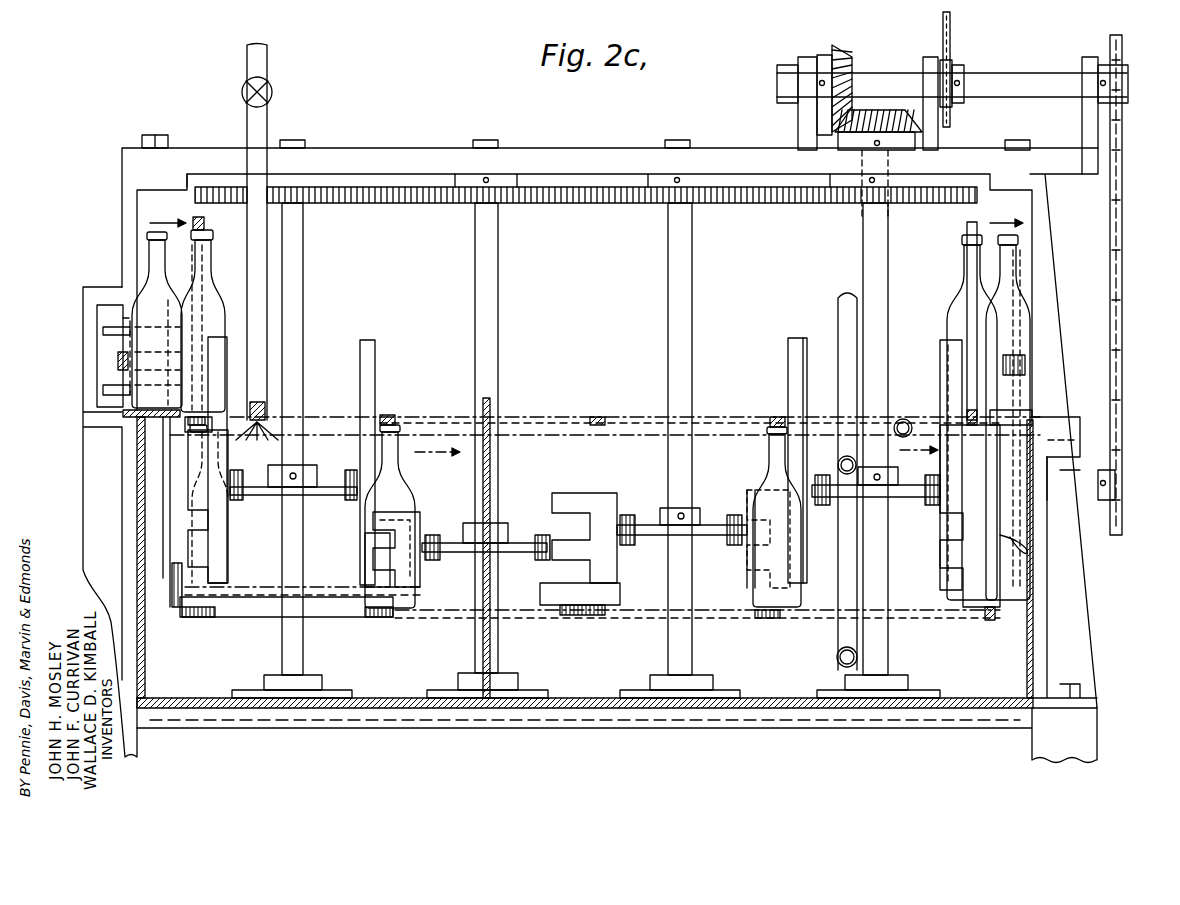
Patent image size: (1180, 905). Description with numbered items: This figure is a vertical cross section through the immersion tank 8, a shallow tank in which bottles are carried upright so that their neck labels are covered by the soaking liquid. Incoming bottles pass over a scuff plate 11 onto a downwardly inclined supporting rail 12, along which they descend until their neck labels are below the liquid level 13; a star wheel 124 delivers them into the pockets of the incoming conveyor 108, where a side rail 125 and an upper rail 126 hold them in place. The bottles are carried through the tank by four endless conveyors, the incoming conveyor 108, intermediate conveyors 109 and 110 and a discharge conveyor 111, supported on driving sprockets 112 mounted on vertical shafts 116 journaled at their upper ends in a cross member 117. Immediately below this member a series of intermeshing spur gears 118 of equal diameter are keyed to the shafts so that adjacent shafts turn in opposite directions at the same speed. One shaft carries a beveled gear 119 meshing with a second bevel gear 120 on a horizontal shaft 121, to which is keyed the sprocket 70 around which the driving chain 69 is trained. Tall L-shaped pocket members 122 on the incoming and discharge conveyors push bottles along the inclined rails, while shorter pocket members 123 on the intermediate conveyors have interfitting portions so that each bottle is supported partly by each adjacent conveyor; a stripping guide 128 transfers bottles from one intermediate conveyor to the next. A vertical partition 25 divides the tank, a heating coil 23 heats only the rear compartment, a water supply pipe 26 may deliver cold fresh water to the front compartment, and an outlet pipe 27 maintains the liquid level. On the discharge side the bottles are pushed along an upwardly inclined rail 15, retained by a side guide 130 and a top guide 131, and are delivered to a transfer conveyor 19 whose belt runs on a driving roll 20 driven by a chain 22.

The immersion tank 8 is at (605, 705).
The scuff plate 11 is at (180, 410).
The downwardly inclined supporting rail 12 is at (190, 610).
The liquid level 13 is at (440, 432).
The upwardly inclined rail 15 is at (988, 620).
The transfer conveyor 19 is at (1070, 416).
The driving roll 20 is at (1078, 522).
The chain 22 is at (1116, 446).
The heating coil 23 is at (836, 656).
The vertical partition 25 is at (490, 408).
The water supply pipe 26 is at (262, 332).
The outlet pipe 27 is at (905, 418).
The driving chain 69 is at (952, 36).
The sprocket 70 is at (1123, 52).
The incoming conveyor 108 is at (238, 480).
The intermediate conveyor 109 is at (435, 533).
The intermediate conveyor 110 is at (630, 513).
The discharge conveyor 111 is at (822, 506).
The driving sprocket 112 is at (265, 497).
The vertical shaft 116 is at (305, 262).
The cross member 117 is at (584, 156).
The spur gear 118 is at (352, 205).
The beveled gear 119 is at (880, 108).
The bevel gear 120 is at (848, 48).
The horizontal shaft 121 is at (1023, 85).
The pocket member 122 is at (222, 340).
The pocket member 123 is at (420, 510).
The star wheel 124 is at (102, 382).
The side rail 125 is at (165, 470).
The upper rail 126 is at (192, 428).
The stripping guide 128 is at (325, 592).
The side guide 130 is at (1010, 537).
The top guide 131 is at (985, 412).